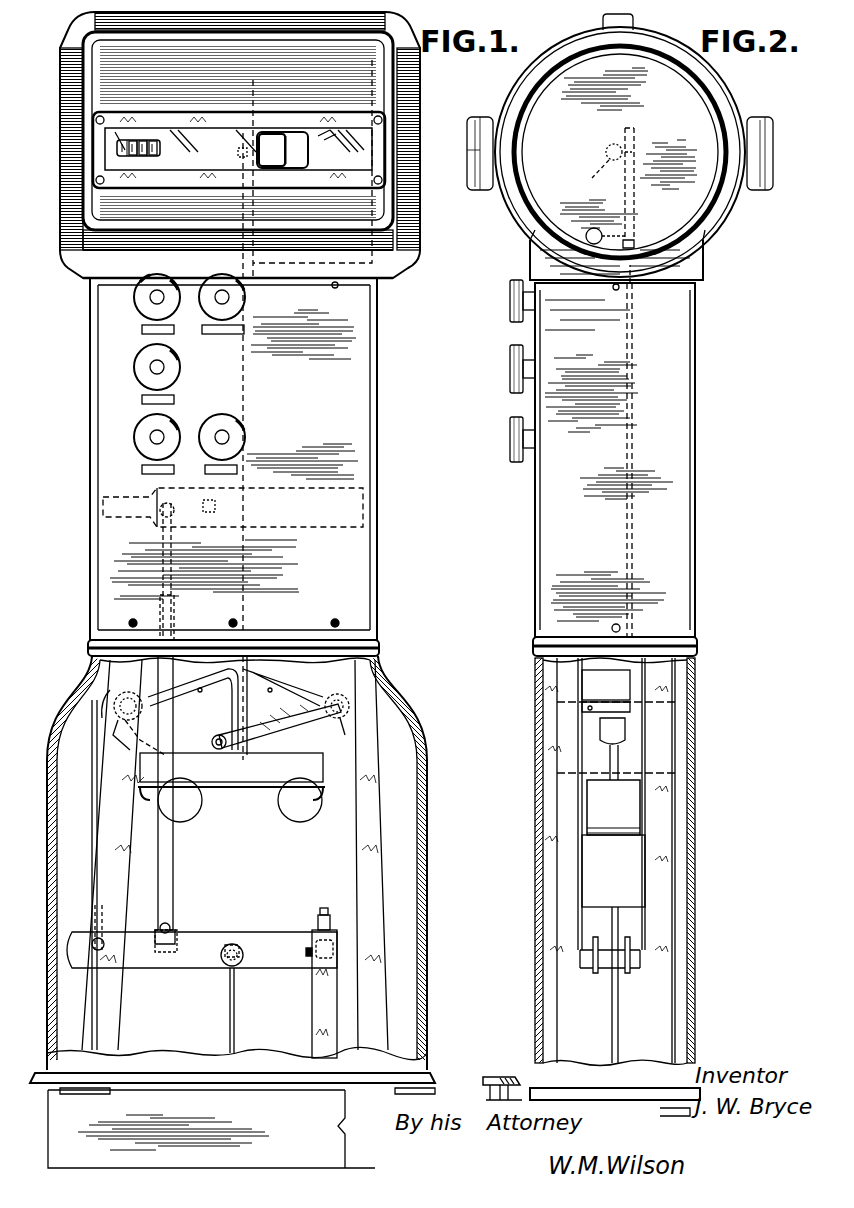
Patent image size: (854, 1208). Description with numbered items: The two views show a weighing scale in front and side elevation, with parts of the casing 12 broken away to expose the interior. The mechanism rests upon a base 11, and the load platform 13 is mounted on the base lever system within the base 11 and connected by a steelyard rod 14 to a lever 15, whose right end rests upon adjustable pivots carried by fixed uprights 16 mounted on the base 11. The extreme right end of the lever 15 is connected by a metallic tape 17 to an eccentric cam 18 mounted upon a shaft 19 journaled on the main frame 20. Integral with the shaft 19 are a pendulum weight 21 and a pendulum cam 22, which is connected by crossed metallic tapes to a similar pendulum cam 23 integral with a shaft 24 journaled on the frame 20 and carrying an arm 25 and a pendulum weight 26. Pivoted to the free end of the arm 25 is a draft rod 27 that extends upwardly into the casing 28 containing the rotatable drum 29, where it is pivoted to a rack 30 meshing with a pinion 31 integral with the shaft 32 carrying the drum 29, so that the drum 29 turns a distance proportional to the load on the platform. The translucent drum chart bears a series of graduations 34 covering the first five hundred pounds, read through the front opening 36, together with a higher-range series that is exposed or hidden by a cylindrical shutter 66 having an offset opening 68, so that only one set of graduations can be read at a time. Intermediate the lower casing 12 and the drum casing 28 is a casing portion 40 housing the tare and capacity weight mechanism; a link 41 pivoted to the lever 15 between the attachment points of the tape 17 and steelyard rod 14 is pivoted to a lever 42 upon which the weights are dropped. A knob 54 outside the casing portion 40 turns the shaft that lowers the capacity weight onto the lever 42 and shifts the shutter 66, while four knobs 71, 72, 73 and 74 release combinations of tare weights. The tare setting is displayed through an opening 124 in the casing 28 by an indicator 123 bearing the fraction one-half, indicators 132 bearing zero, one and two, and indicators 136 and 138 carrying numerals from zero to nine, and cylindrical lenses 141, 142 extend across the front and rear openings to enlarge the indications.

In FIG. 1, the base 11 is at (183, 1110).
In FIG. 2, the base 11 is at (518, 1100).
In FIG. 1, the casing 12 is at (425, 812).
In FIG. 2, the casing 12 is at (693, 688).
In FIG. 1, the load platform 13 is at (258, 1080).
In FIG. 1, the steelyard rod 14 is at (234, 1010).
In FIG. 2, the steelyard rod 14 is at (615, 985).
In FIG. 1, the lever 15 is at (206, 940).
In FIG. 2, the lever 15 is at (625, 975).
In FIG. 1, the fixed uprights 16 is at (330, 1005).
In FIG. 1, the metallic tape 17 is at (93, 767).
In FIG. 1, the eccentric cam 18 is at (108, 708).
In FIG. 1, the shaft 19 is at (139, 745).
In FIG. 1, the main frame 20 is at (352, 870).
In FIG. 2, the main frame 20 is at (642, 870).
In FIG. 1, the pendulum weight 21 is at (182, 814).
In FIG. 1, the pendulum cam 22 is at (196, 697).
In FIG. 1, the pendulum cam 23 is at (280, 697).
In FIG. 1, the shaft 24 is at (346, 722).
In FIG. 1, the arm 25 is at (272, 746).
In FIG. 1, the pendulum weight 26 is at (290, 812).
In FIG. 1, the draft rod 27 is at (245, 392).
In FIG. 2, the draft rod 27 is at (626, 470).
In FIG. 1, the casing 28 is at (380, 98).
In FIG. 2, the casing 28 is at (620, 147).
In FIG. 1, the rotatable drum 29 is at (252, 84).
In FIG. 2, the rack 30 is at (634, 212).
In FIG. 1, the pinion 31 is at (238, 153).
In FIG. 2, the pinion 31 is at (592, 183).
In FIG. 2, the shaft 32 is at (612, 145).
In FIG. 1, the series of graduations 34 is at (267, 134).
In FIG. 1, the front opening 36 is at (324, 140).
In FIG. 1, the casing portion 40 is at (376, 501).
In FIG. 2, the casing portion 40 is at (550, 548).
In FIG. 1, the link 41 is at (158, 862).
In FIG. 1, the lever 42 is at (288, 528).
In FIG. 1, the knob 54 is at (232, 297).
In FIG. 2, the knob 54 is at (510, 305).
In FIG. 1, the shutter 66 is at (305, 160).
In FIG. 1, the offset opening 68 is at (284, 134).
In FIG. 1, the knob 71 is at (221, 418).
In FIG. 2, the knob 71 is at (510, 440).
In FIG. 1, the knob 72 is at (172, 430).
In FIG. 1, the knob 73 is at (174, 368).
In FIG. 2, the knob 73 is at (510, 365).
In FIG. 1, the knob 74 is at (183, 272).
In FIG. 1, the indicator 123 is at (146, 147).
In FIG. 1, the opening 124 is at (188, 130).
In FIG. 1, the indicators 132 is at (126, 147).
In FIG. 1, the indicator 136 is at (141, 147).
In FIG. 1, the indicator 138 is at (133, 147).
In FIG. 2, the cylindrical lens 141 is at (473, 168).
In FIG. 2, the cylindrical lens 142 is at (765, 168).